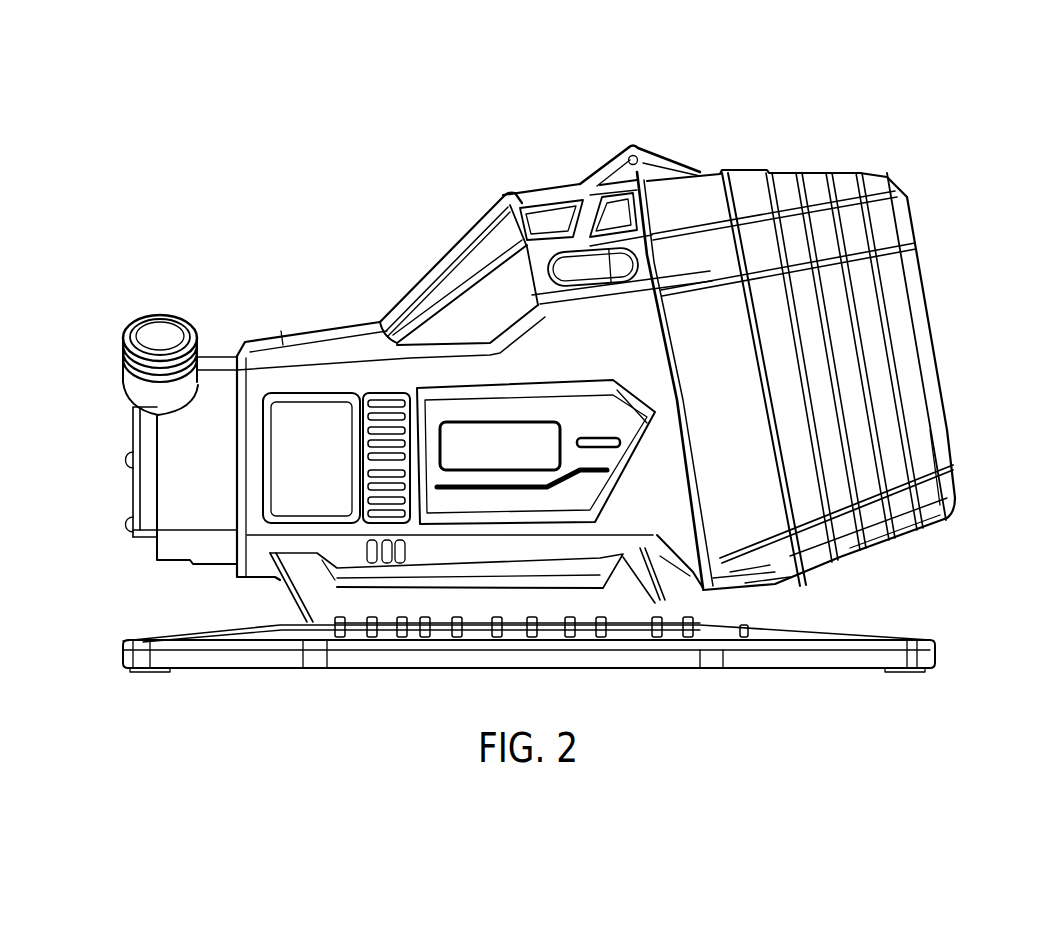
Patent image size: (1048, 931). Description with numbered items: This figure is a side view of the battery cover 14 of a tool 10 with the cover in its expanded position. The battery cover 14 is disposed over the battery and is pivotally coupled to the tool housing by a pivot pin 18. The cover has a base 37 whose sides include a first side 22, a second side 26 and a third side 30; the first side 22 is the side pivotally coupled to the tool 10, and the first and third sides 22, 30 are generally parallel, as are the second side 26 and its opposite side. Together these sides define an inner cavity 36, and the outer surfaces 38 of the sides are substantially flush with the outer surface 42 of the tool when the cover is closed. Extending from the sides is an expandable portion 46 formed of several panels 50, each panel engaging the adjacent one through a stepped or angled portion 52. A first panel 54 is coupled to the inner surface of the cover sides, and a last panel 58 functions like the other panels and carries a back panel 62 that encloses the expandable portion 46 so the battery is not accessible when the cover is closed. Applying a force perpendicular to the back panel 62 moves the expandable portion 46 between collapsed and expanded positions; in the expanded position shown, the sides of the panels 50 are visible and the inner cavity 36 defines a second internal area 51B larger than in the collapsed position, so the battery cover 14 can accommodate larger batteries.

The tool 10 is at (125, 203).
The battery cover 14 is at (747, 153).
The pivot pin 18 is at (632, 148).
The first side 22 is at (716, 183).
The second side 26 is at (748, 567).
The third side 30 is at (782, 578).
The inner cavity 36 is at (952, 466).
The base 37 is at (770, 585).
The outer surfaces 38 is at (718, 545).
The outer surface of the tool 42 is at (677, 538).
The expandable portion 46 is at (847, 157).
The panels 50 is at (890, 170).
The second internal area 51B is at (880, 398).
The stepped or angled portion 52 is at (852, 558).
The first panel 54 is at (764, 174).
The last panel 58 is at (915, 417).
The back panel 62 is at (920, 296).